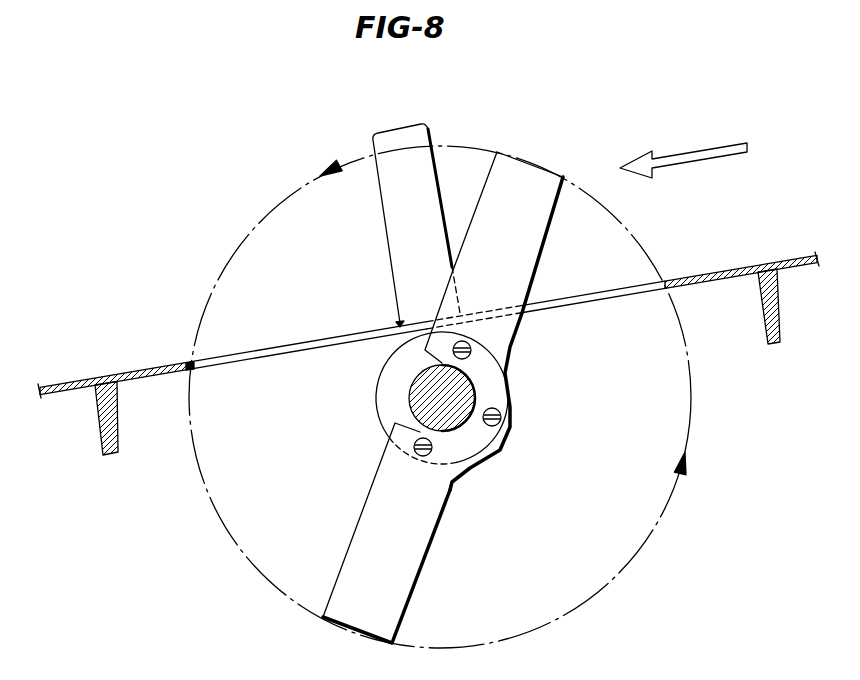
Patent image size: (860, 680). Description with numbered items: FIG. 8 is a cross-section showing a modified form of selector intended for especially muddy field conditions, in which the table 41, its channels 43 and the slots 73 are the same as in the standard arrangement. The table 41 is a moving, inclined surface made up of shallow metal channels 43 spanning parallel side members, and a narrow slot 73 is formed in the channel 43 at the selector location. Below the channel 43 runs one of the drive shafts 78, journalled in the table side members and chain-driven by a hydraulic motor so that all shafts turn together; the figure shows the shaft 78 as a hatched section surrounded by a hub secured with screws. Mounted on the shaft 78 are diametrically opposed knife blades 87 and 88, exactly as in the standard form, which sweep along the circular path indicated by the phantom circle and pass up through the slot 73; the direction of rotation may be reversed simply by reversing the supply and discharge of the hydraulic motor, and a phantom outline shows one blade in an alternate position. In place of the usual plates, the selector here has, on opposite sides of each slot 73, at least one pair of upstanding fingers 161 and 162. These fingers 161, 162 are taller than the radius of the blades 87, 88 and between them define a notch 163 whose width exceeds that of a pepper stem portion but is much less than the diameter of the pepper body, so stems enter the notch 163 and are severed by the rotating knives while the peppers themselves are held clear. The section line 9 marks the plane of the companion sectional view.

The section line 9- 9 is at (563, 168).
The table 41 is at (108, 460).
The channel 43 is at (146, 370).
The slot 73 is at (281, 353).
The drive shaft 78 is at (476, 396).
The knife 87 is at (410, 577).
The knife 88 is at (537, 246).
The upstanding finger 161 is at (400, 103).
The upstanding finger 162 is at (130, 678).
The notch 163 is at (167, 678).